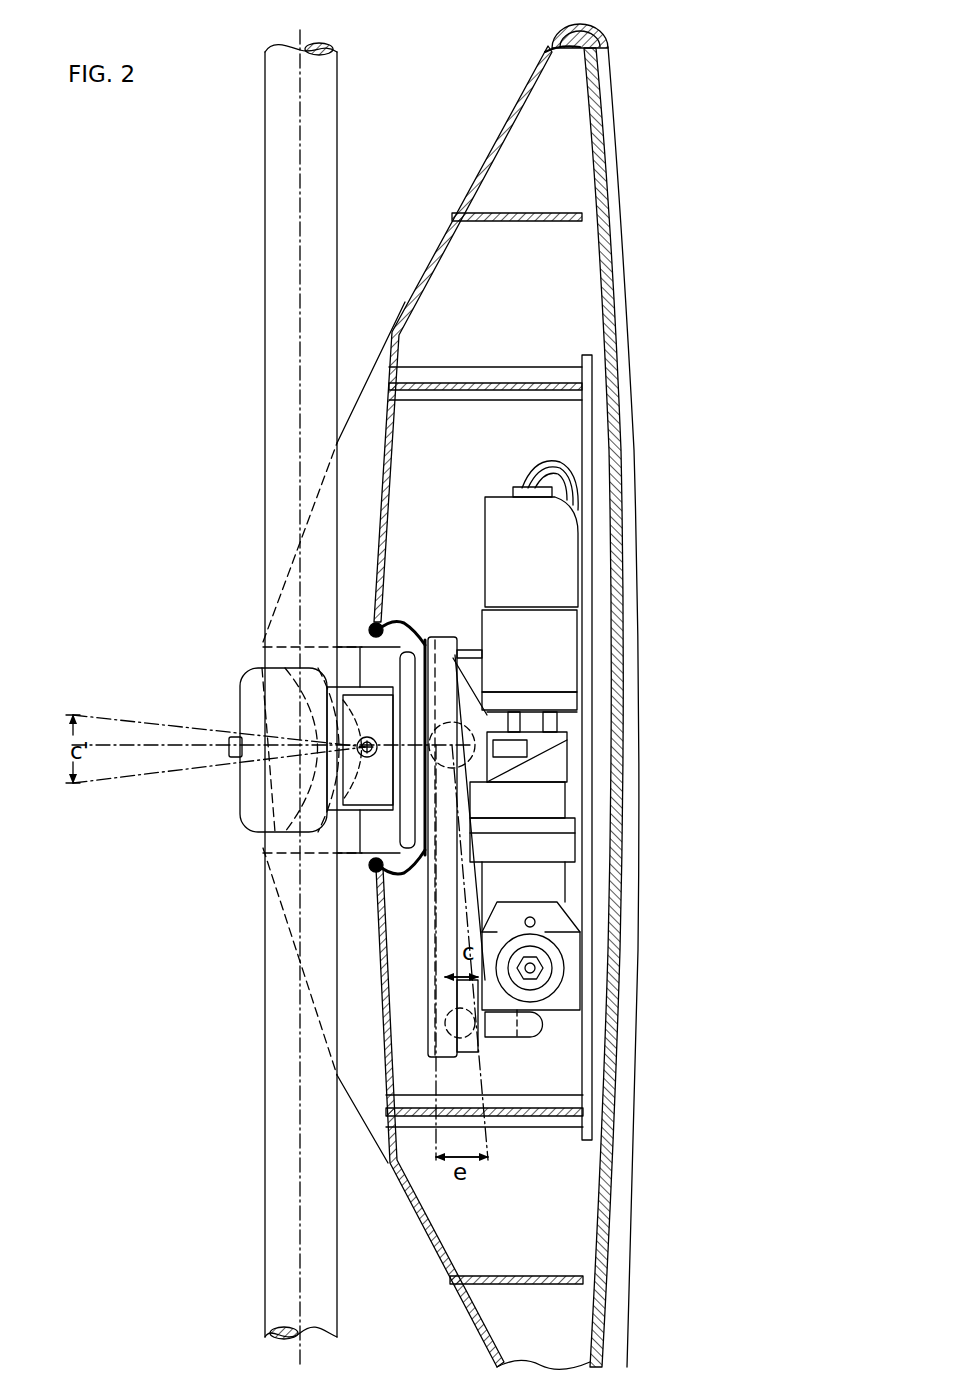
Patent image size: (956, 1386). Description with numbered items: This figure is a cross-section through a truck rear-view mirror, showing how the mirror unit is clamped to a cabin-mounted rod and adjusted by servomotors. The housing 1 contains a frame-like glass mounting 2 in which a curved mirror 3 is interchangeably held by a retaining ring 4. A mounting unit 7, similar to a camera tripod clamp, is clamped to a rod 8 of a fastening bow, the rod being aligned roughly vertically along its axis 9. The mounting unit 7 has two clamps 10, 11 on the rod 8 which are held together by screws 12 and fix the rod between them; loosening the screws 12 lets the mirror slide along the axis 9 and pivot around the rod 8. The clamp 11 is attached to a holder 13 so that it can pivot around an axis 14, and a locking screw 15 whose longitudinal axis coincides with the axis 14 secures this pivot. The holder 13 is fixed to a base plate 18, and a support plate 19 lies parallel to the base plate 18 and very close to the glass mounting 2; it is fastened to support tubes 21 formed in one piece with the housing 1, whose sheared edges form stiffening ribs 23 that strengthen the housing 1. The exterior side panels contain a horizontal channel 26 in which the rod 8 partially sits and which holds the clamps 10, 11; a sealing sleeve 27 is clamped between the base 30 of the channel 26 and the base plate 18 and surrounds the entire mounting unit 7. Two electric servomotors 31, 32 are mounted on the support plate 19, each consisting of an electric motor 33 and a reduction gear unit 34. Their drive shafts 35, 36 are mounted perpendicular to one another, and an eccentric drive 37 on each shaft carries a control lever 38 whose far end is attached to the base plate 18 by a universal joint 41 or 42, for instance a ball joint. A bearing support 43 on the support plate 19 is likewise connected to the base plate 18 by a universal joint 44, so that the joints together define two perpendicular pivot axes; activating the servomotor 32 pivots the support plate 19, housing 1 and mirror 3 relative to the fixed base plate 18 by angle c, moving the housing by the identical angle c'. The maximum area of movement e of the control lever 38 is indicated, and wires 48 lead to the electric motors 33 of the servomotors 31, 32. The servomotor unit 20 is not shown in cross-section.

The housing 1 is at (480, 147).
The glass mounting 2 is at (547, 50).
The curved mirror 3 is at (600, 188).
The retaining ring 4 is at (607, 48).
The mounting unit 7 is at (240, 688).
The rod 8 is at (285, 117).
The rod axis 9 is at (299, 173).
The clamp 10 is at (262, 693).
The clamp 11 is at (338, 690).
The screws 12 is at (229, 746).
The holder 13 is at (398, 626).
The pivot axis 14 is at (370, 755).
The locking screw 15 is at (370, 740).
The base plate 18 is at (445, 637).
The support plate 19 is at (590, 435).
The sensor unit 20 is at (467, 503).
The support tubes 21 is at (445, 382).
The stiffening ribs 23 is at (517, 1276).
The horizontal channel 26 is at (363, 433).
The sealing sleeve 27 is at (405, 874).
The base 30 is at (380, 480).
The servomotor 31 is at (497, 496).
The servomotor 32 is at (570, 983).
The electric motor 33 is at (545, 520).
The reduction gear unit 34 is at (552, 627).
The drive shaft 35 is at (532, 718).
The drive shaft 36 is at (535, 968).
The eccentric drive 37 is at (550, 1003).
The control lever 38 is at (503, 1022).
The universal joint 41 is at (531, 703).
The universal joint 42 is at (462, 1036).
The bearing support 43 is at (515, 798).
The universal joint 44 is at (487, 715).
The circuit paths 48 is at (550, 470).